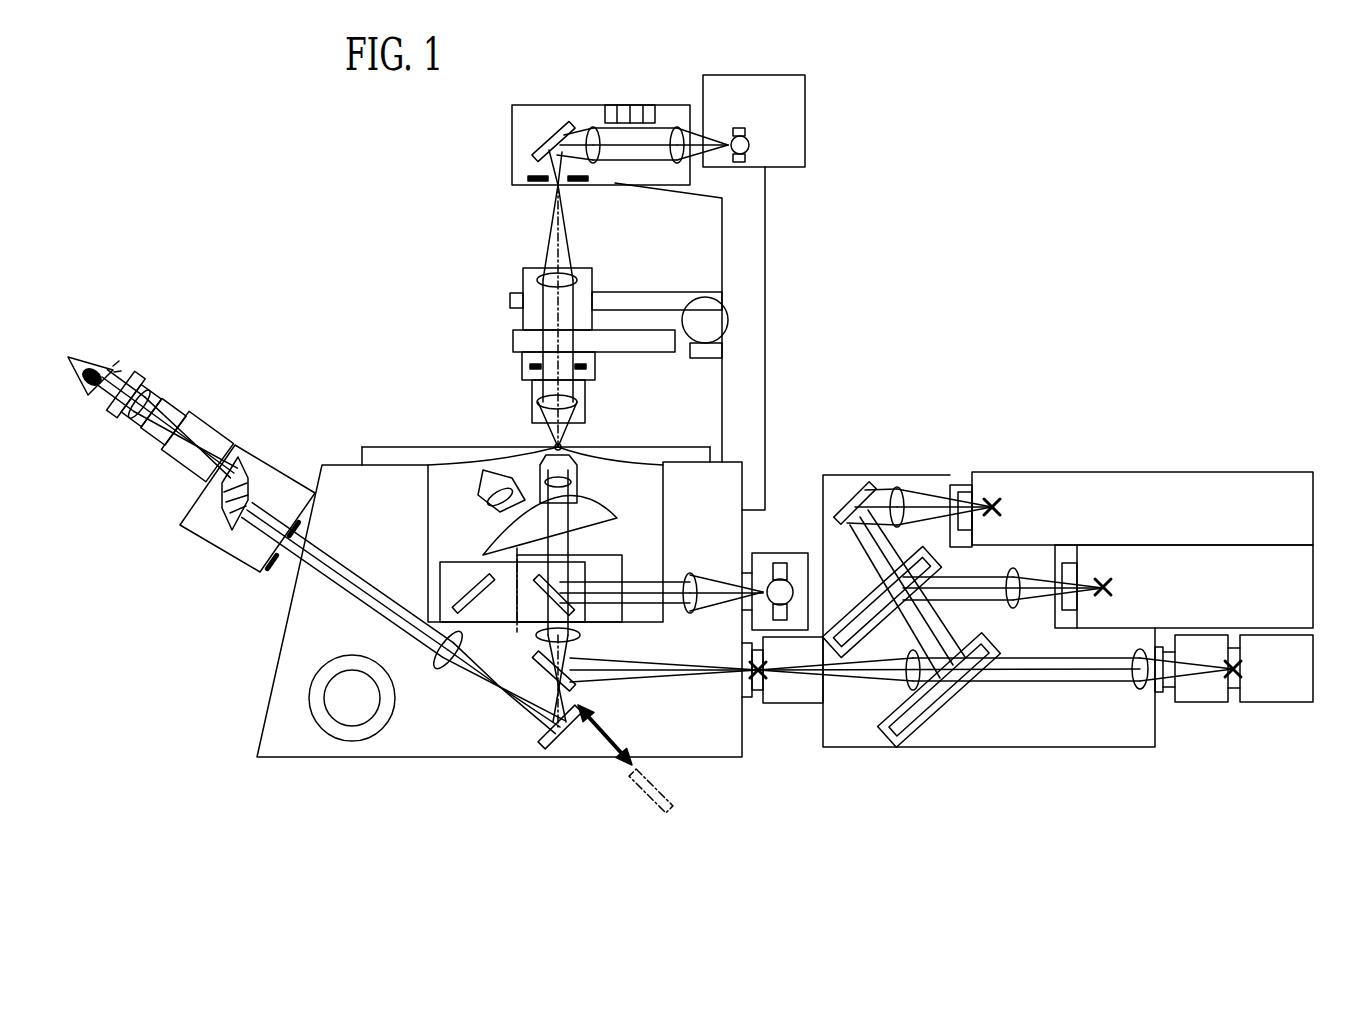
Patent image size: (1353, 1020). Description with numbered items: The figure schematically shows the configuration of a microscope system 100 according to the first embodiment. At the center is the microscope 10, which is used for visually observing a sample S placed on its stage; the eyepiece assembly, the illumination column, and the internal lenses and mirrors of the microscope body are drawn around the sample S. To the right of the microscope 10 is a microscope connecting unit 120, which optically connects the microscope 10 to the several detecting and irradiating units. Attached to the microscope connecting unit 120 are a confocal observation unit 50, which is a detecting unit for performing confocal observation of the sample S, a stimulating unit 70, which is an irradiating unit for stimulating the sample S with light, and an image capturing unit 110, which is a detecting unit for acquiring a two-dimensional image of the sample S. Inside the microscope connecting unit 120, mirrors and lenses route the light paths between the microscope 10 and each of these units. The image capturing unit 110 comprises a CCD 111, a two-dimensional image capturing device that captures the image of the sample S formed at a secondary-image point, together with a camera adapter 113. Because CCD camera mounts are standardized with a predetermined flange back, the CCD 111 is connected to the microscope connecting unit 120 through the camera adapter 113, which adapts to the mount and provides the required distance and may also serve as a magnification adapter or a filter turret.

The microscope system 100 is at (313, 218).
The microscope 10 is at (338, 465).
The sample S is at (556, 447).
The microscope connecting unit 120 is at (845, 475).
The stimulating unit 70 is at (1153, 585).
The confocal observation unit 50 is at (1257, 500).
The image capturing unit 110 is at (1282, 792).
The CCD 111 is at (1260, 705).
The camera adapter 113 is at (1200, 705).